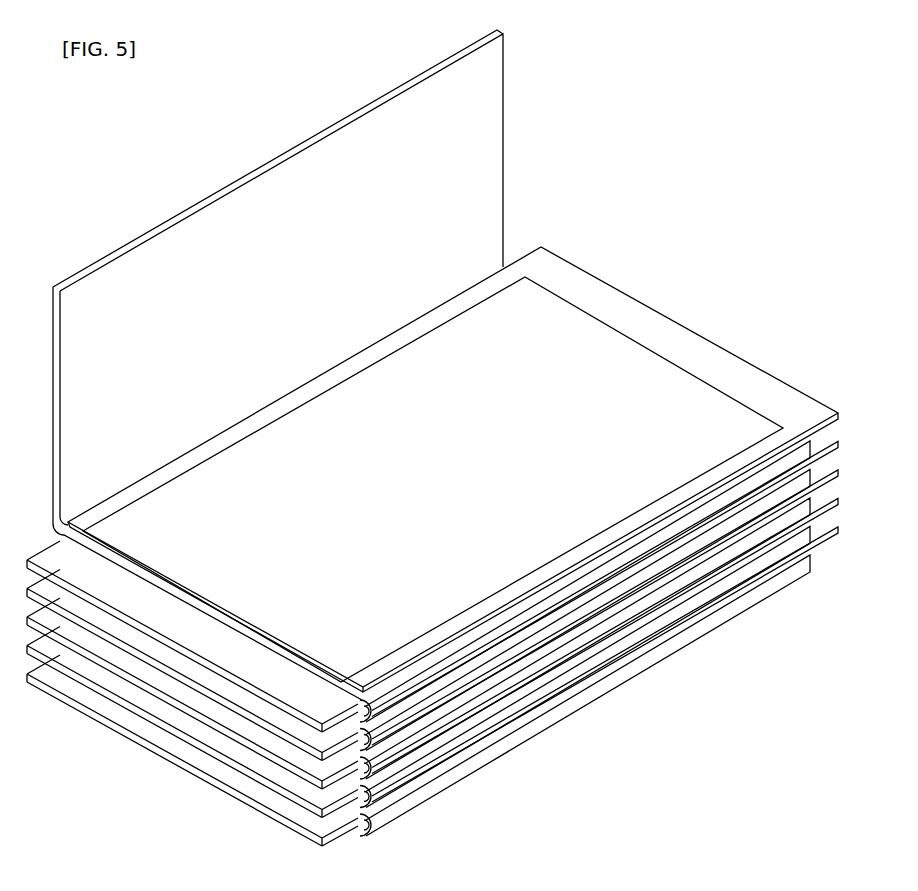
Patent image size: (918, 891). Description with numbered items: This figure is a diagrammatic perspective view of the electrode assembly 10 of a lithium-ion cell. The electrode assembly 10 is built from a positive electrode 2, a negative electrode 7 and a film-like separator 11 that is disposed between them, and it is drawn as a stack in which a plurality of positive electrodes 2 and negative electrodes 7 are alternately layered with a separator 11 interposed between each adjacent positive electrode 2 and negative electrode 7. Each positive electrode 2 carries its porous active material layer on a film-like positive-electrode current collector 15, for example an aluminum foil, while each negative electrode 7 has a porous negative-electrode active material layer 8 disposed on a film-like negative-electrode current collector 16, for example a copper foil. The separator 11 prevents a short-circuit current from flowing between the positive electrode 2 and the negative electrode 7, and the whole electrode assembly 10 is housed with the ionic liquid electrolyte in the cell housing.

The electrode assembly 10 is at (771, 124).
The separator 11 is at (483, 172).
The positive-electrode current collector 15 is at (192, 693).
The positive electrode 2 is at (162, 733).
The negative electrode 7 is at (468, 520).
The negative-electrode active material layer 8 is at (572, 332).
The negative-electrode current collector 16 is at (642, 332).